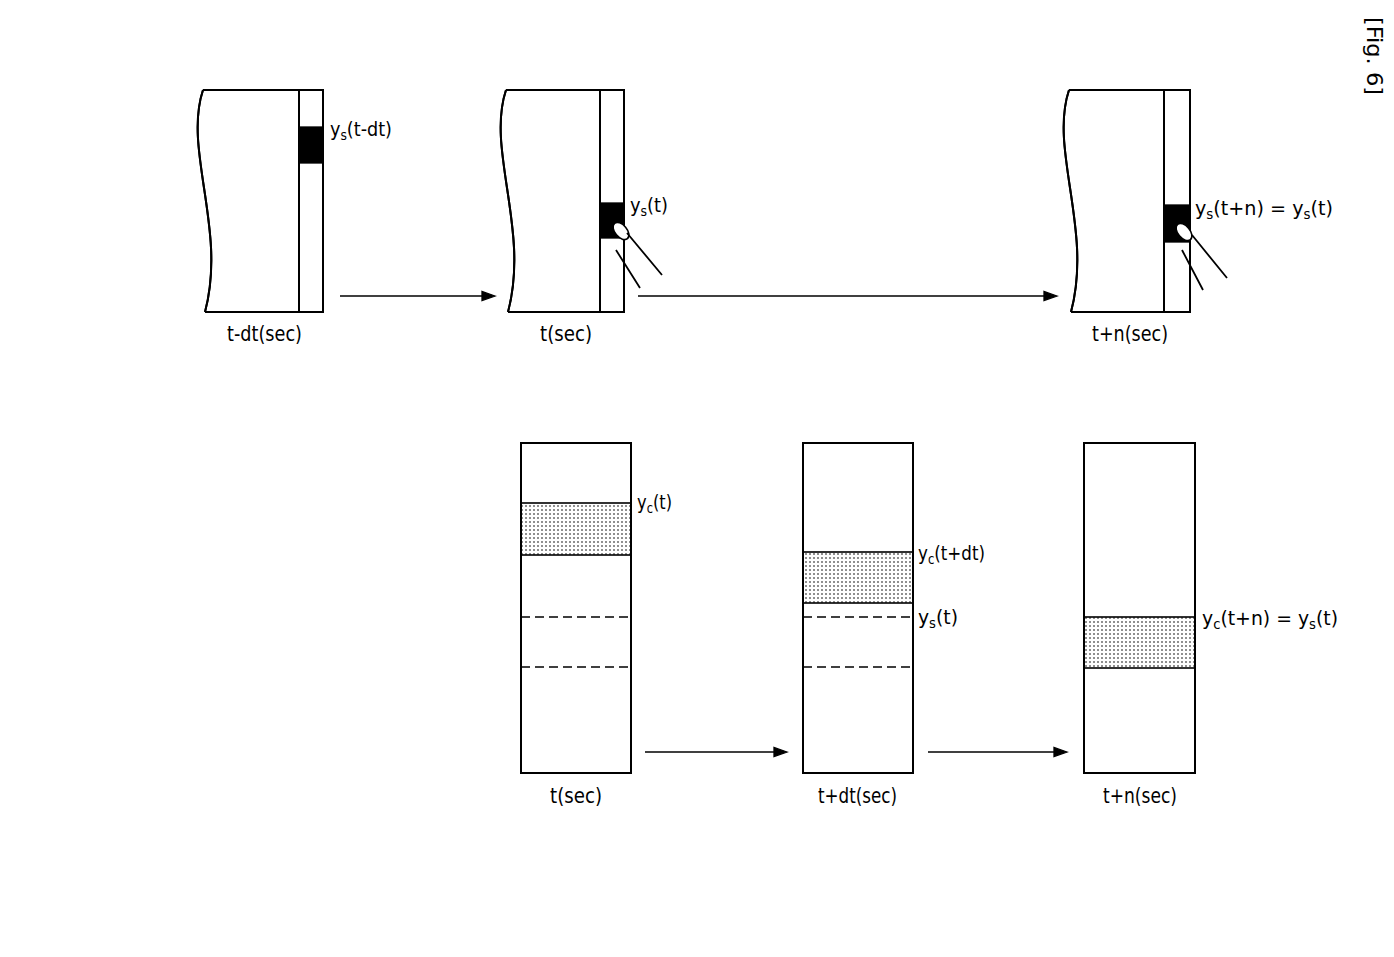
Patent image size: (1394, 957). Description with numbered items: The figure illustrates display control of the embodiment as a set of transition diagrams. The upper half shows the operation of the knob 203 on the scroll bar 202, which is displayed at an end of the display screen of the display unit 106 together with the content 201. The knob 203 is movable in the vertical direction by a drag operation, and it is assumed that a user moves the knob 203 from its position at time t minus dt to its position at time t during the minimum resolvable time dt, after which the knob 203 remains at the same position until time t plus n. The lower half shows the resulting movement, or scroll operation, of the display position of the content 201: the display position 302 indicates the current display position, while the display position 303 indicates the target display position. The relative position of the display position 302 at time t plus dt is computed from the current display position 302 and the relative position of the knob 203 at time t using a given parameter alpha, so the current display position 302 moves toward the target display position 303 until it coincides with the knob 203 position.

The display unit 106 is at (248, 88).
The content 201 is at (217, 105).
The scroll bar 202 is at (308, 88).
The knob 203 is at (313, 127).
The display position 302 is at (521, 527).
The target display position 303 is at (521, 640).